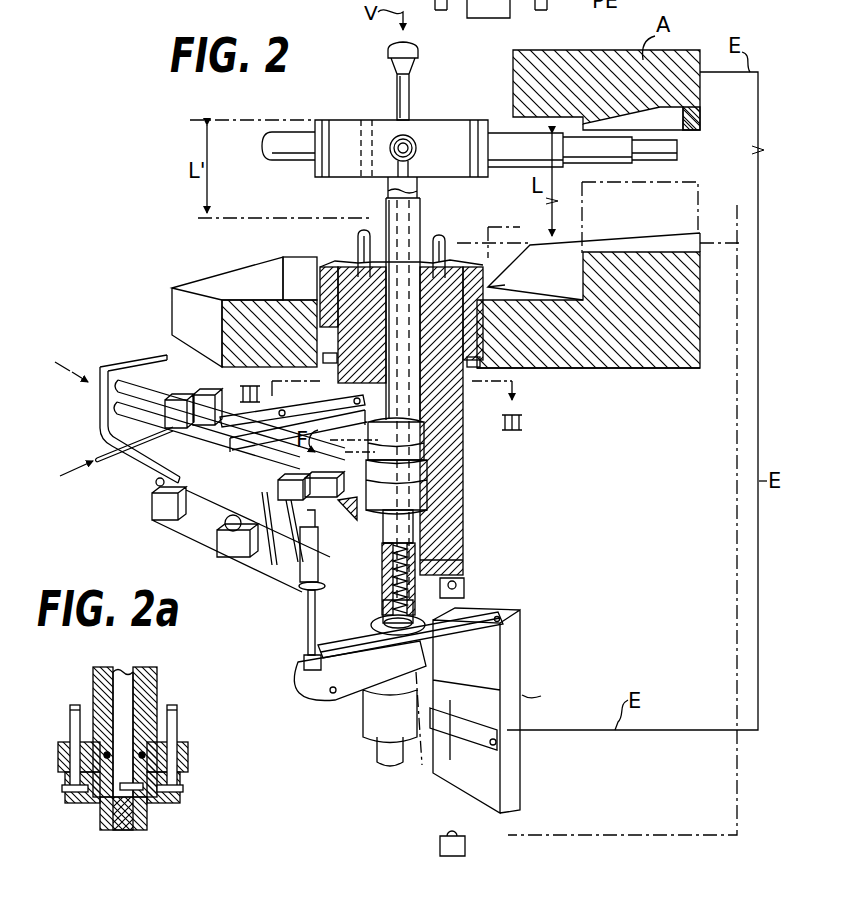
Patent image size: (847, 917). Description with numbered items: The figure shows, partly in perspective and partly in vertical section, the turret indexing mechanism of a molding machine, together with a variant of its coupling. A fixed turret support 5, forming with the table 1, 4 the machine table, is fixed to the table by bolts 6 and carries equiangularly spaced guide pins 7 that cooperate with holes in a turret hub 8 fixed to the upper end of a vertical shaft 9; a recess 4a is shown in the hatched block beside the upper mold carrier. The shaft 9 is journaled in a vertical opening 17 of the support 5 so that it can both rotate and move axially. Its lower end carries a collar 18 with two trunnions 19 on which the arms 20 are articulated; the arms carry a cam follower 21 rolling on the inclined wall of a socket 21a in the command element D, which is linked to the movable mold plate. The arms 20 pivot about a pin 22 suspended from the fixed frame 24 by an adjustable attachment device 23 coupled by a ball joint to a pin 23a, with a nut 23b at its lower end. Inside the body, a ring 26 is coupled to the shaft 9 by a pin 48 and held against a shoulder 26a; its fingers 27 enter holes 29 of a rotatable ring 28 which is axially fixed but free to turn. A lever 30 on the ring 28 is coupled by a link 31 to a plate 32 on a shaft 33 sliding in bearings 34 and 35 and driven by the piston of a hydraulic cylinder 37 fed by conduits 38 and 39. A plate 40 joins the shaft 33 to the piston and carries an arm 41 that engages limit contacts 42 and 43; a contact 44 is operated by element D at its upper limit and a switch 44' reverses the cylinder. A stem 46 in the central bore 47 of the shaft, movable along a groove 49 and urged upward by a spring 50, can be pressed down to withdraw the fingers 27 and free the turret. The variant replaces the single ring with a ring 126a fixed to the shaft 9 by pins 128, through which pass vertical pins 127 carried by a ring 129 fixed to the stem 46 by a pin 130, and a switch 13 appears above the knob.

In FIG. 2, the table 1 is at (582, 350).
In FIG. 2, the table 4 is at (692, 300).
In FIG. 2, the recess 4a is at (690, 118).
In FIG. 2, the turret support 5 is at (285, 272).
In FIG. 2, the bolts 6 is at (383, 292).
In FIG. 2, the guide pins 7 is at (362, 120).
In FIG. 2, the turret hub 8 is at (332, 125).
In FIG. 2, the vertical shaft 9 is at (421, 212).
In FIG. 2a, the vertical shaft 9 is at (143, 688).
In FIG. 2, the switch 13 is at (490, 18).
In FIG. 2, the vertical opening 17 is at (464, 402).
In FIG. 2, the collar 18 is at (375, 685).
In FIG. 2, the trunnions 19 is at (415, 660).
In FIG. 2, the arms 20 is at (518, 660).
In FIG. 2, the cam follower 21 is at (497, 613).
In FIG. 2, the socket 21a is at (505, 648).
In FIG. 2, the pin 22 is at (310, 692).
In FIG. 2, the attachment device 23 is at (307, 633).
In FIG. 2, the pin 23a is at (310, 592).
In FIG. 2, the nut 23b is at (302, 660).
In FIG. 2, the fixed frame 24 is at (292, 545).
In FIG. 2, the ring 26 is at (430, 522).
In FIG. 2, the shoulder 26a is at (440, 490).
In FIG. 2, the fingers 27 is at (428, 470).
In FIG. 2, the rotatable ring 28 is at (428, 462).
In FIG. 2, the holes 29 is at (430, 422).
In FIG. 2, the lever 30 is at (354, 325).
In FIG. 2, the link 31 is at (314, 408).
In FIG. 2, the plate 32 is at (240, 412).
In FIG. 2, the shaft 33 is at (160, 370).
In FIG. 2, the bearing 34 is at (222, 395).
In FIG. 2, the bearing 35 is at (318, 500).
In FIG. 2, the hydraulic cylinder 37 is at (262, 545).
In FIG. 2, the supply conduit 38 is at (103, 450).
In FIG. 2, the supply conduit 39 is at (268, 572).
In FIG. 2, the plate 40 is at (130, 373).
In FIG. 2, the arm 41 is at (133, 457).
In FIG. 2, the contact 42 is at (238, 553).
In FIG. 2, the contact 43 is at (160, 505).
In FIG. 2, the contact 44 is at (493, 587).
In FIG. 2, the switch 44' is at (480, 848).
In FIG. 2, the stem 46 is at (410, 95).
In FIG. 2a, the stem 46 is at (123, 697).
In FIG. 2, the central bore 47 is at (385, 625).
In FIG. 2, the pin 48 is at (405, 548).
In FIG. 2, the groove 49 is at (390, 588).
In FIG. 2, the spring 50 is at (423, 562).
In FIG. 2a, the spring 50 is at (147, 817).
In FIG. 2a, the ring 126a is at (185, 760).
In FIG. 2a, the vertical pins 127 is at (178, 724).
In FIG. 2a, the pins 128 is at (110, 750).
In FIG. 2a, the ring 129 is at (160, 800).
In FIG. 2a, the pin 130 is at (100, 802).